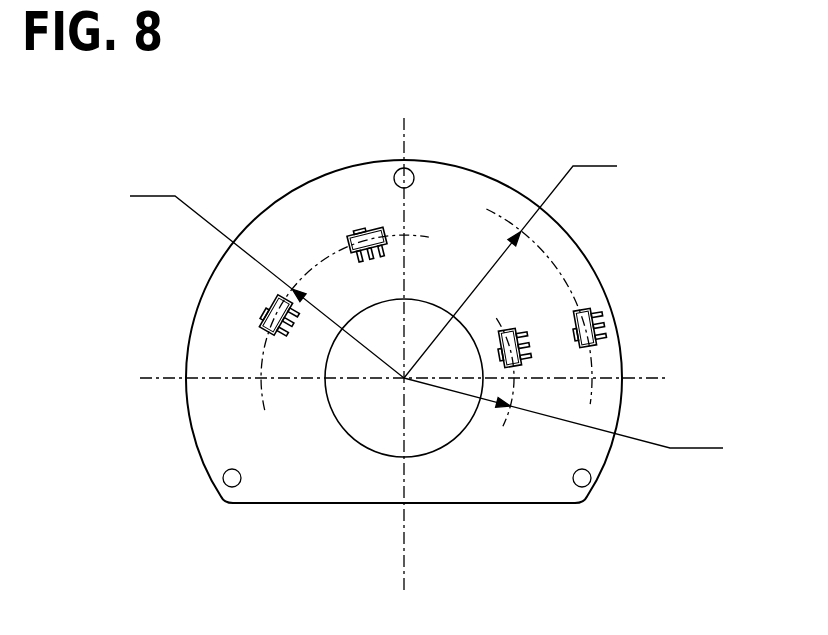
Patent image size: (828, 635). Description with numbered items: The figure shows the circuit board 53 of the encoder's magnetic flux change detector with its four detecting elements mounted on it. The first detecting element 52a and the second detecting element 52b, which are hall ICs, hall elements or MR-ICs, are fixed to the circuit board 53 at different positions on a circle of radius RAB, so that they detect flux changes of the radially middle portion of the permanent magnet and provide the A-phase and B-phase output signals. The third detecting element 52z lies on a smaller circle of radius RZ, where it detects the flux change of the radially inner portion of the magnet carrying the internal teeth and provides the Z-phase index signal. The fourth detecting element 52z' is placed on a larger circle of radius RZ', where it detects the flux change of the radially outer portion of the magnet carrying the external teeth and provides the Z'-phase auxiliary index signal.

The first detecting element 52a is at (357, 231).
The second detecting element 52b is at (268, 303).
The third detecting element 52z is at (612, 259).
The fourth detecting element 52z' is at (654, 309).
The circuit board 53 is at (213, 392).
The radius RAB is at (267, 266).
The radius RZ is at (563, 414).
The radius RZ' is at (510, 252).